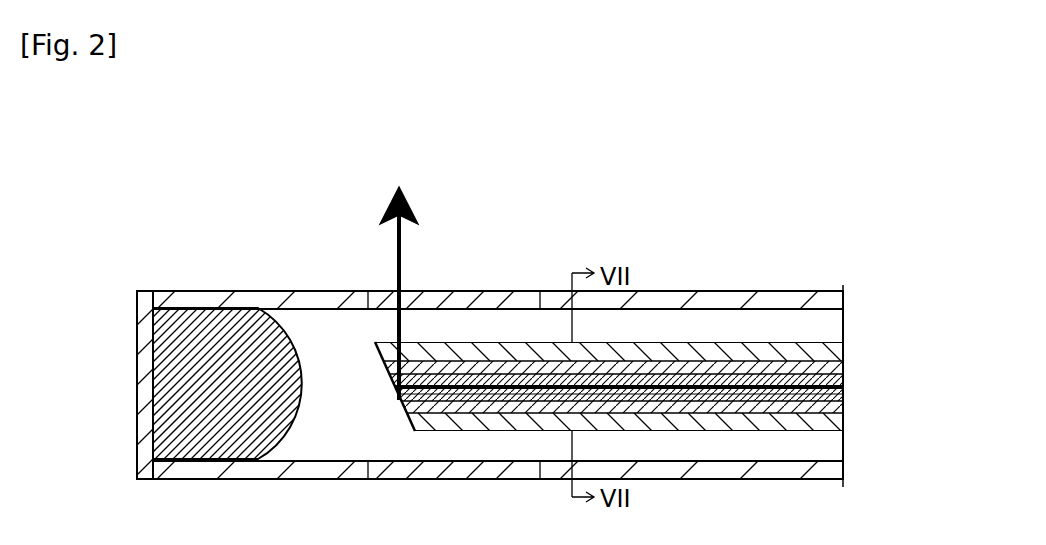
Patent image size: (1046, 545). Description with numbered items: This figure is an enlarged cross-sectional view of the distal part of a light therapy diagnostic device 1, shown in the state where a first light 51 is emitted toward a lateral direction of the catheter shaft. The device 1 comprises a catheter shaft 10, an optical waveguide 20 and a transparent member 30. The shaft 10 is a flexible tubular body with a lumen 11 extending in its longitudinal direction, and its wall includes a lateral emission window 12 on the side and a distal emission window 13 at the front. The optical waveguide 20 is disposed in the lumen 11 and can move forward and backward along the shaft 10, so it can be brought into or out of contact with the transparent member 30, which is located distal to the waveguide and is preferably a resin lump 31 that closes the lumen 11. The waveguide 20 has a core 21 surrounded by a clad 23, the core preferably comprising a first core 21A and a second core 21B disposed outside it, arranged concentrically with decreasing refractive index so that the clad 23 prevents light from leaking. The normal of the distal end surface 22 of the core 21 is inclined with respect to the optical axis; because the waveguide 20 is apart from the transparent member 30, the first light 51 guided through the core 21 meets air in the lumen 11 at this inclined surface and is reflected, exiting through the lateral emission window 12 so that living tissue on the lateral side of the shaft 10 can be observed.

The light therapy diagnostic device 1 is at (116, 224).
The catheter shaft 10 is at (268, 300).
The lumen 11 is at (365, 433).
The lateral emission window 12 is at (478, 298).
The distal emission window 13 is at (137, 450).
The optical waveguide 20 is at (603, 279).
The core 21 is at (606, 298).
The first core 21A is at (782, 245).
The second core 21B is at (710, 368).
The distal end surface 22 is at (413, 432).
The clad 23 is at (780, 350).
The transparent member 30 is at (302, 351).
The resin lump 31 is at (167, 312).
The first light 51 is at (398, 266).